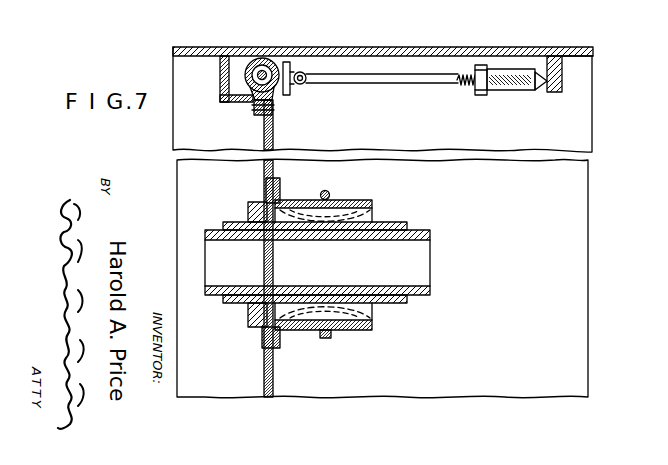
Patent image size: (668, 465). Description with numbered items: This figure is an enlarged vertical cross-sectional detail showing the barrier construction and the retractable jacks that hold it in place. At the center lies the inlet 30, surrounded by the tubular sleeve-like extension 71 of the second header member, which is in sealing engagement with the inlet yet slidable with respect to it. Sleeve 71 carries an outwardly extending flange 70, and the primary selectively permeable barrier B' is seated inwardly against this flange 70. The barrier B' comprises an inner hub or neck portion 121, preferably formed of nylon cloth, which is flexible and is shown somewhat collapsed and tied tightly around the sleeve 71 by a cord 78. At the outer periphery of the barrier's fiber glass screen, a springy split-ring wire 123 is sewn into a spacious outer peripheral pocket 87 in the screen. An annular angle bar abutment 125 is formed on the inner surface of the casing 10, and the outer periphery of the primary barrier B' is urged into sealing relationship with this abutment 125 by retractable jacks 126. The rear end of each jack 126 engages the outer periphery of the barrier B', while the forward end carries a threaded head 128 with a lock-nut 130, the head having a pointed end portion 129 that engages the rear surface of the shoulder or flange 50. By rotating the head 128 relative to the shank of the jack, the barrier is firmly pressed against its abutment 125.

The wall 10 is at (443, 43).
The inlet 30 is at (428, 232).
The shoulder 50 is at (563, 90).
The outwardly extending flange 70 is at (250, 214).
The tubular sleeve-like extension 71 is at (406, 222).
The cord 78 is at (321, 193).
The outer peripheral pocket 87 is at (258, 104).
The hub portion 121 is at (362, 203).
The split-ring wire 123 is at (270, 58).
The annular angle bar abutment 125 is at (221, 78).
The jacks 126 is at (400, 84).
The threaded head 128 is at (507, 91).
The pointed end portion 129 is at (541, 89).
The lock-nut 130 is at (476, 94).
The primary selectively permeable barrier means B' is at (290, 248).